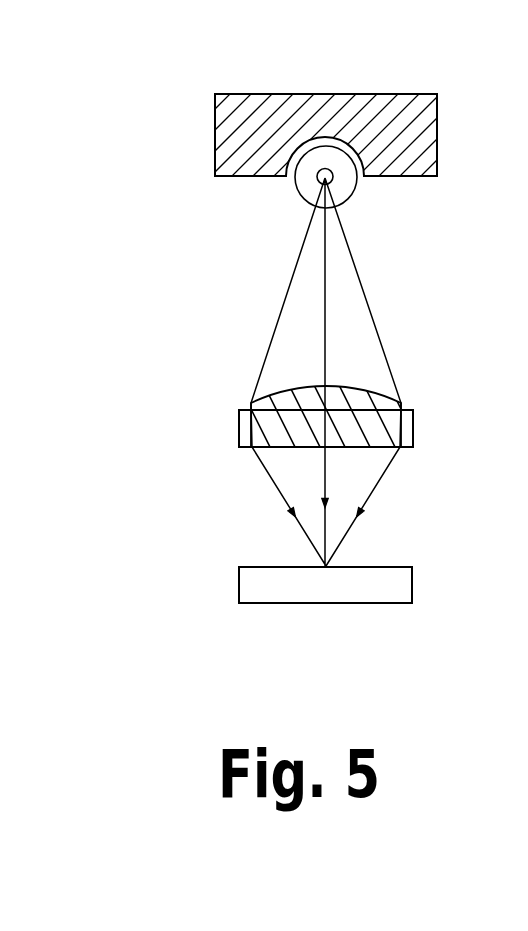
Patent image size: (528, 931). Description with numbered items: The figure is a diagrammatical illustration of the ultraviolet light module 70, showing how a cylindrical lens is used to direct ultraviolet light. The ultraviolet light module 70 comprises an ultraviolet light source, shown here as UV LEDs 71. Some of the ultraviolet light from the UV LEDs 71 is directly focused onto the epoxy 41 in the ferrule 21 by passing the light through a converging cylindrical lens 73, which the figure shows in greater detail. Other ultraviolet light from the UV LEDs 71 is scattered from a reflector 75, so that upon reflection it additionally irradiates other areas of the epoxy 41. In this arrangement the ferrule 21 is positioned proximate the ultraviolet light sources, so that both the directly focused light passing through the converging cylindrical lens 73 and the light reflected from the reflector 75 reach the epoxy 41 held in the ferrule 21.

The reflector 75 is at (293, 152).
The ferrule 21 is at (357, 192).
The epoxy 41 is at (320, 181).
The converging cylindrical lens 73 is at (245, 434).
The UV LEDs 71 is at (268, 585).
The ultraviolet light module 70 is at (156, 370).